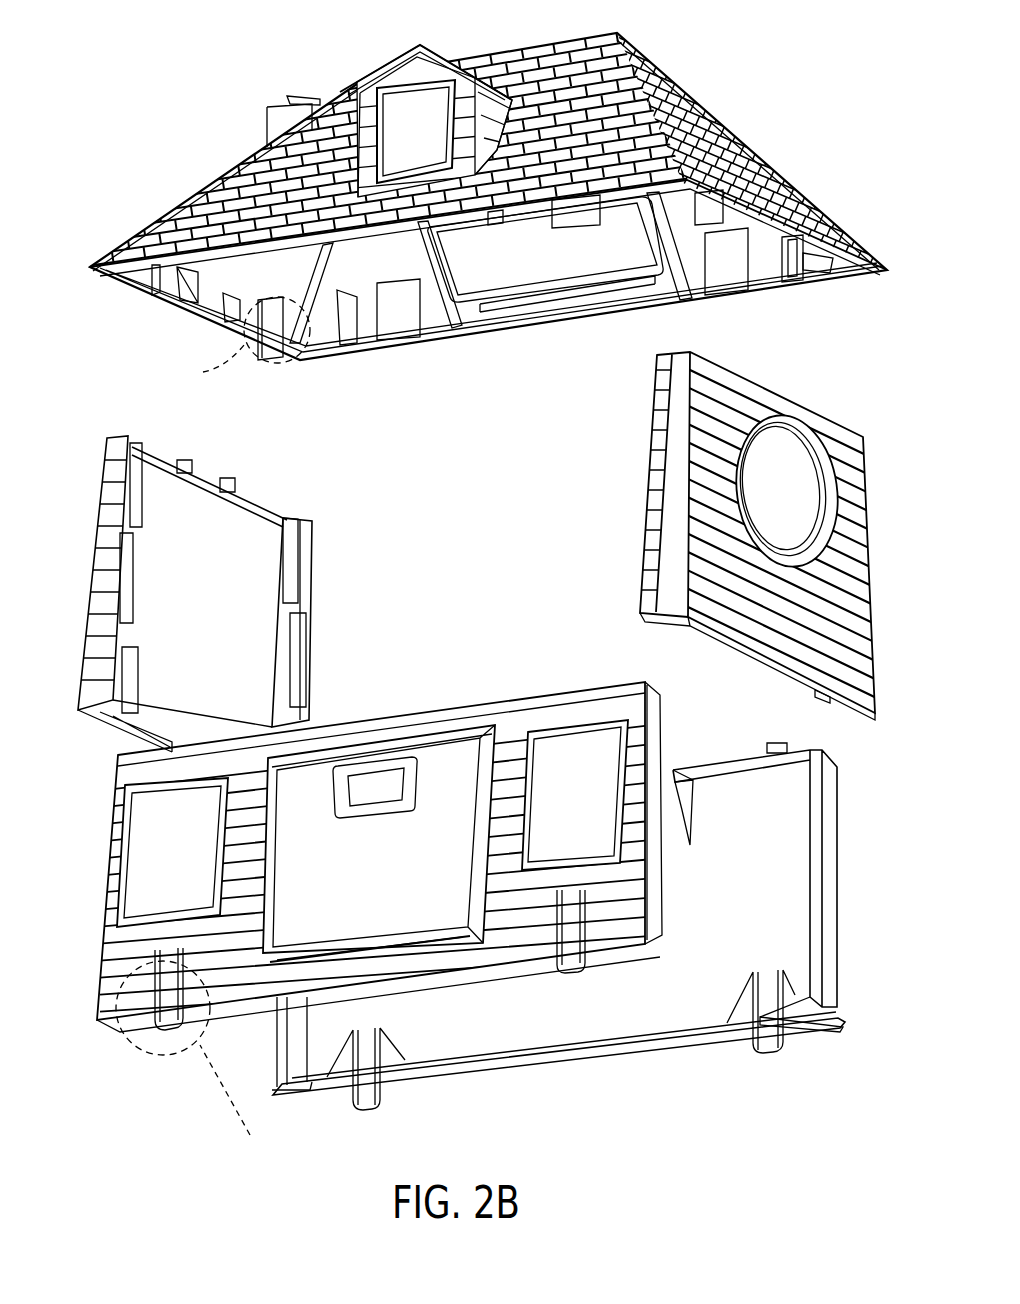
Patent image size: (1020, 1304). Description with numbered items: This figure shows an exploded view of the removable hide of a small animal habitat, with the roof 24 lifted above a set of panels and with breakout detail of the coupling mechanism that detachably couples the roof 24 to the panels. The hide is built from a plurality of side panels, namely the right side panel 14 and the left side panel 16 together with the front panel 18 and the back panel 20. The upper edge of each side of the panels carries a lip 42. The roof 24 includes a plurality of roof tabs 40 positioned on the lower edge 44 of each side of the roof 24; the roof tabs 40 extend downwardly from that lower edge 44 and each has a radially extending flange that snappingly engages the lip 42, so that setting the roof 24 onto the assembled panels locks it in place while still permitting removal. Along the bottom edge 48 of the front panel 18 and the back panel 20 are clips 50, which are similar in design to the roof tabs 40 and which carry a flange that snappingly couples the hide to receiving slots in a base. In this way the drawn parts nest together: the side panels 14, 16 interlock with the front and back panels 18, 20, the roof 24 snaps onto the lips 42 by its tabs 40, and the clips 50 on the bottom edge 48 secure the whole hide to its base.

The roof 24 is at (638, 47).
The lower edge 44 is at (768, 228).
The roof tabs 40 is at (838, 262).
The left side panel 16 is at (100, 557).
The lip 42 is at (262, 509).
The right side panel 14 is at (845, 561).
The front panel 18 is at (113, 940).
The clips 50 is at (770, 1040).
The back panel 20 is at (832, 890).
The bottom edge 48 is at (693, 1045).